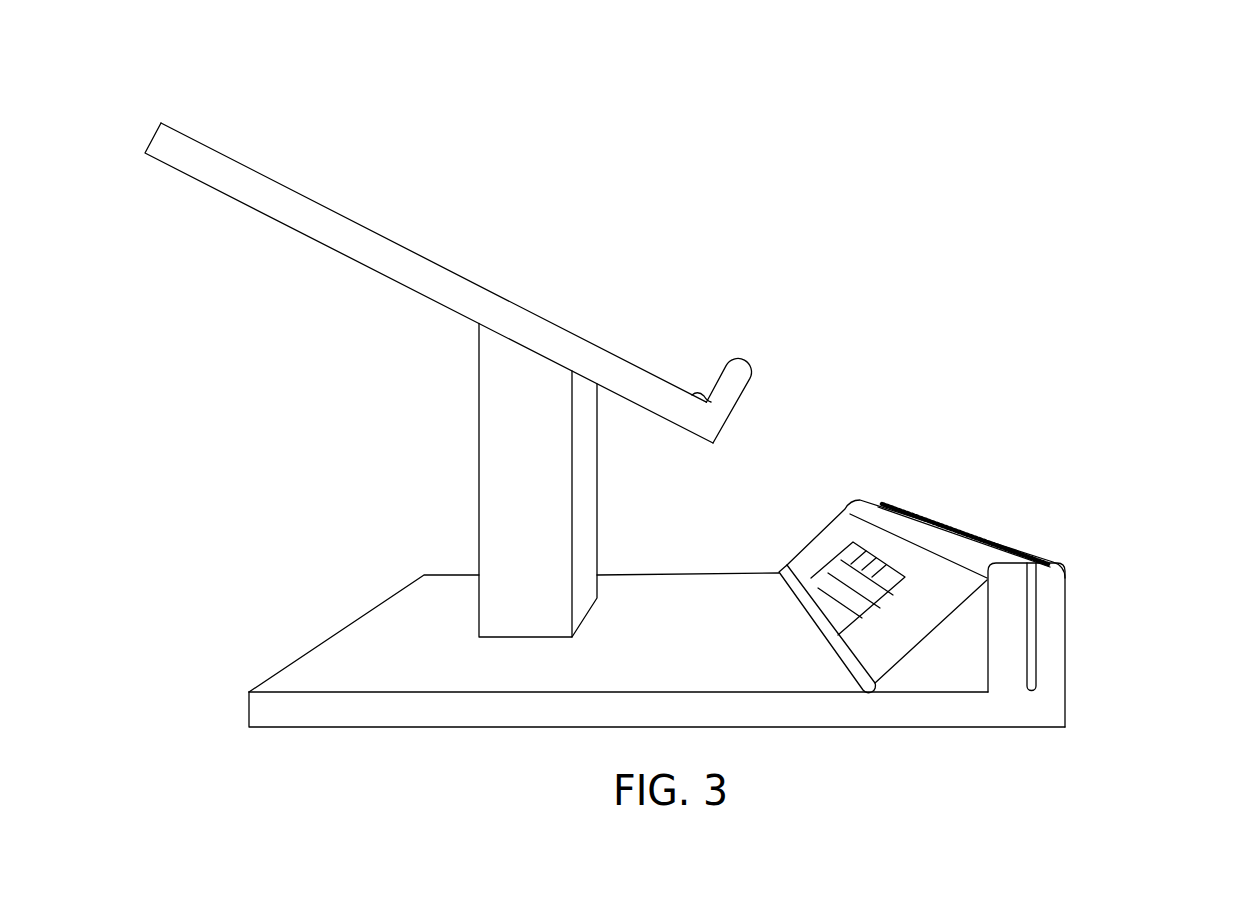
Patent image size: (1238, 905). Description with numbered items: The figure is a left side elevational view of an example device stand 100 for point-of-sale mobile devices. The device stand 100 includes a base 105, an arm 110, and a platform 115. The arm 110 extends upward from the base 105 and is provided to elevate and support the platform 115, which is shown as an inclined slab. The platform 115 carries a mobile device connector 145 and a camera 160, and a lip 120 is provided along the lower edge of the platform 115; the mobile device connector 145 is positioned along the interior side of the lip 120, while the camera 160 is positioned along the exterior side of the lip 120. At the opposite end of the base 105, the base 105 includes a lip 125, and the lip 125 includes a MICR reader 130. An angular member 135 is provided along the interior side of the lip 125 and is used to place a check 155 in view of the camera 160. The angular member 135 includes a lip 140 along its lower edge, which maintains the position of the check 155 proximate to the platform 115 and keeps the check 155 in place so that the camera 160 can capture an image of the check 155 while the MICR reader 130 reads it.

The device stand 100 is at (1137, 51).
The base 105 is at (322, 675).
The arm 110 is at (477, 458).
The platform 115 is at (195, 130).
The lip 120 is at (733, 368).
The lip 125 is at (1053, 707).
The MICR reader 130 is at (958, 523).
The angular member 135 is at (934, 665).
The lip 140 is at (838, 648).
The mobile device connector 145 is at (693, 395).
The check 155 is at (822, 585).
The camera 160 is at (728, 425).